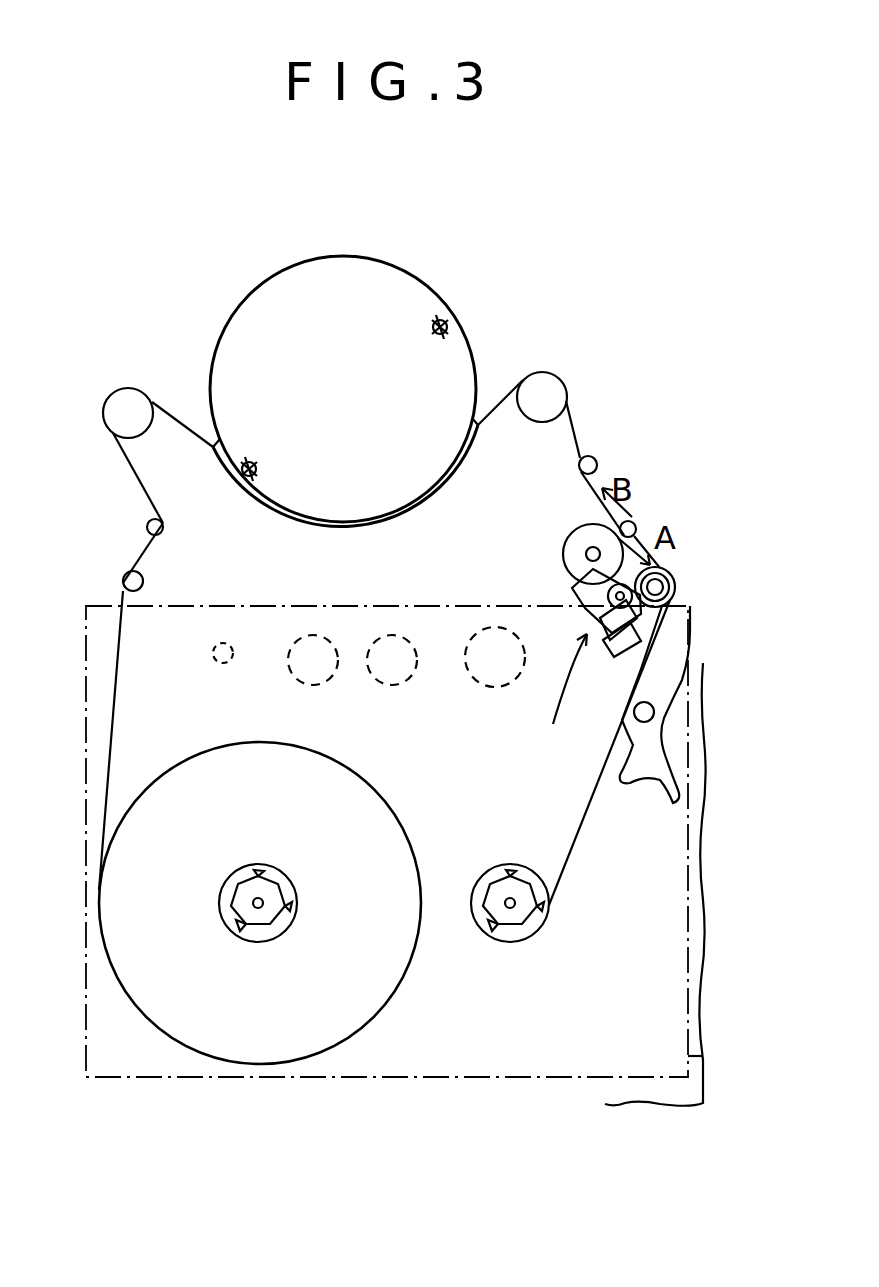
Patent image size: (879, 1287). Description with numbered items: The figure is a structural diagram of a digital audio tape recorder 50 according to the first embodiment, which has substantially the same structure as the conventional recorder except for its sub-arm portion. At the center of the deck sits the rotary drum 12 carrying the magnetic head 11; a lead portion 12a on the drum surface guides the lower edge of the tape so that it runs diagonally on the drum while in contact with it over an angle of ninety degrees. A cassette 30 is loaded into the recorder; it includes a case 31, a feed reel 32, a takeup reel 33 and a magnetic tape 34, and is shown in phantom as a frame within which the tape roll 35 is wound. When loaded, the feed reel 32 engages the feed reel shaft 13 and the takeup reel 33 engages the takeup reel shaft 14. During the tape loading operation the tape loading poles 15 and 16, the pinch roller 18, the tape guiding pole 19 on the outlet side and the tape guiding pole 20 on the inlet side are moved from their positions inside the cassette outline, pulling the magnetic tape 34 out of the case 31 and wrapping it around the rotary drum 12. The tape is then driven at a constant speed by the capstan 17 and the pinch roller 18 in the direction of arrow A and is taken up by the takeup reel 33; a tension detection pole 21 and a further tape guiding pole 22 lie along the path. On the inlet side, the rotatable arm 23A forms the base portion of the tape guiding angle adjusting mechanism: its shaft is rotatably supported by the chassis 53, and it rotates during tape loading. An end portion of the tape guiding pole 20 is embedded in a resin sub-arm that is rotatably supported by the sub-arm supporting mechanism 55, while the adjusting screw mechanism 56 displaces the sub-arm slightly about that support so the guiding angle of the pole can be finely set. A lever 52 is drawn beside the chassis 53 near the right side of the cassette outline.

The magnetic head 11 is at (449, 320).
The rotary drum 12 is at (337, 258).
The lead portion 12a is at (372, 532).
The feed reel shaft 13 is at (265, 922).
The takeup reel shaft 14 is at (512, 925).
The tape loading pole 15 is at (121, 390).
The tape loading pole 16 is at (549, 393).
The capstan 17 is at (636, 522).
The pinch roller 18 is at (570, 548).
The tape guiding pole on the outlet side 19 is at (144, 580).
The tape guiding pole on the inlet side 20 is at (668, 575).
The tension detection pole 21 is at (146, 526).
The tape guiding pole 22 is at (598, 455).
The rotatable arm 23A is at (566, 592).
The cassette 30 is at (686, 1010).
The case 31 is at (705, 1063).
The feed reel 32 is at (230, 890).
The takeup reel 33 is at (483, 876).
The magnetic tape 34 is at (112, 720).
The tape roll 35 is at (372, 1010).
The digital audio tape recorder 50 is at (516, 190).
The lever 52 is at (654, 716).
The chassis 53 is at (705, 690).
The sub-arm supporting mechanism 55 is at (564, 687).
The adjusting screw mechanism 56 is at (645, 612).